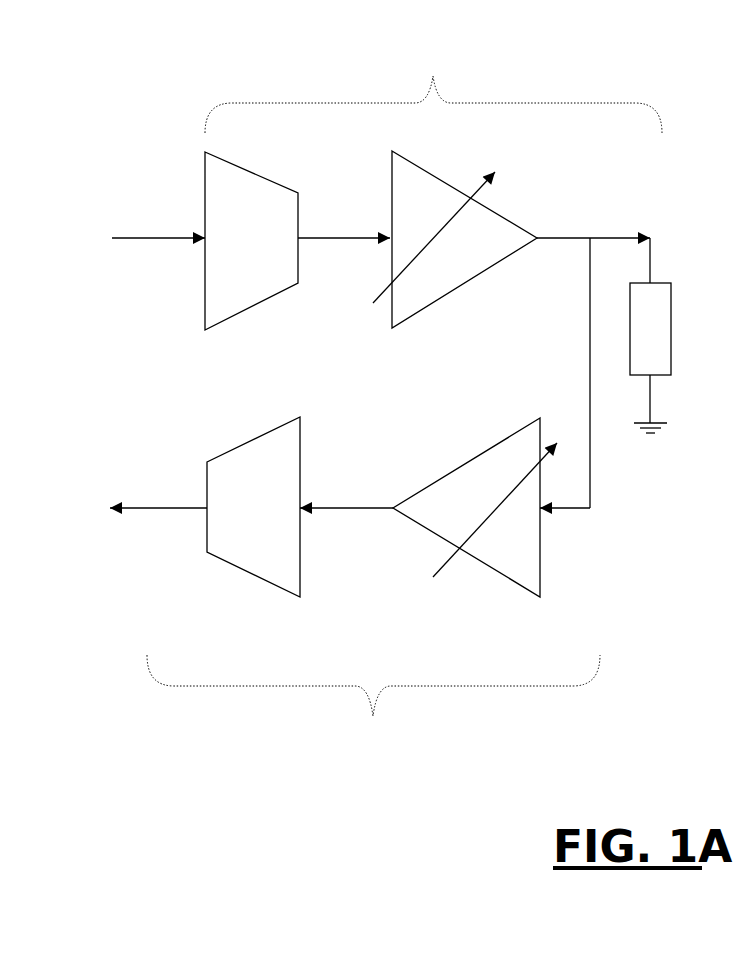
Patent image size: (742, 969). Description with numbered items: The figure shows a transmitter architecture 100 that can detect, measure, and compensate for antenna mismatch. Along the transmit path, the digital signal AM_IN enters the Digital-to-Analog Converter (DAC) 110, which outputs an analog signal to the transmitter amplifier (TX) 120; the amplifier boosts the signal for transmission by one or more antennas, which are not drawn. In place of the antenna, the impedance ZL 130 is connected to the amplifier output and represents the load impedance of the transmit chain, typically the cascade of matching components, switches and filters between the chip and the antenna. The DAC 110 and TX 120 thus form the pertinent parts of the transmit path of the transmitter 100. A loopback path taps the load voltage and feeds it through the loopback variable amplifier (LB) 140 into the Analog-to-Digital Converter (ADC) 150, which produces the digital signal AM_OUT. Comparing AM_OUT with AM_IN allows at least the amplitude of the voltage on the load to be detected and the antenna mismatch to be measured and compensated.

The transmitter architecture 100 is at (154, 96).
The Digital-to-Analog Converter (DAC) 110 is at (278, 202).
The transmitter amplifier (TX) 120 is at (520, 207).
The impedance ZL 130 is at (658, 305).
The loopback variable amplifier (LB) 140 is at (518, 540).
The Analog-to-Digital Converter (ADC) 150 is at (245, 547).